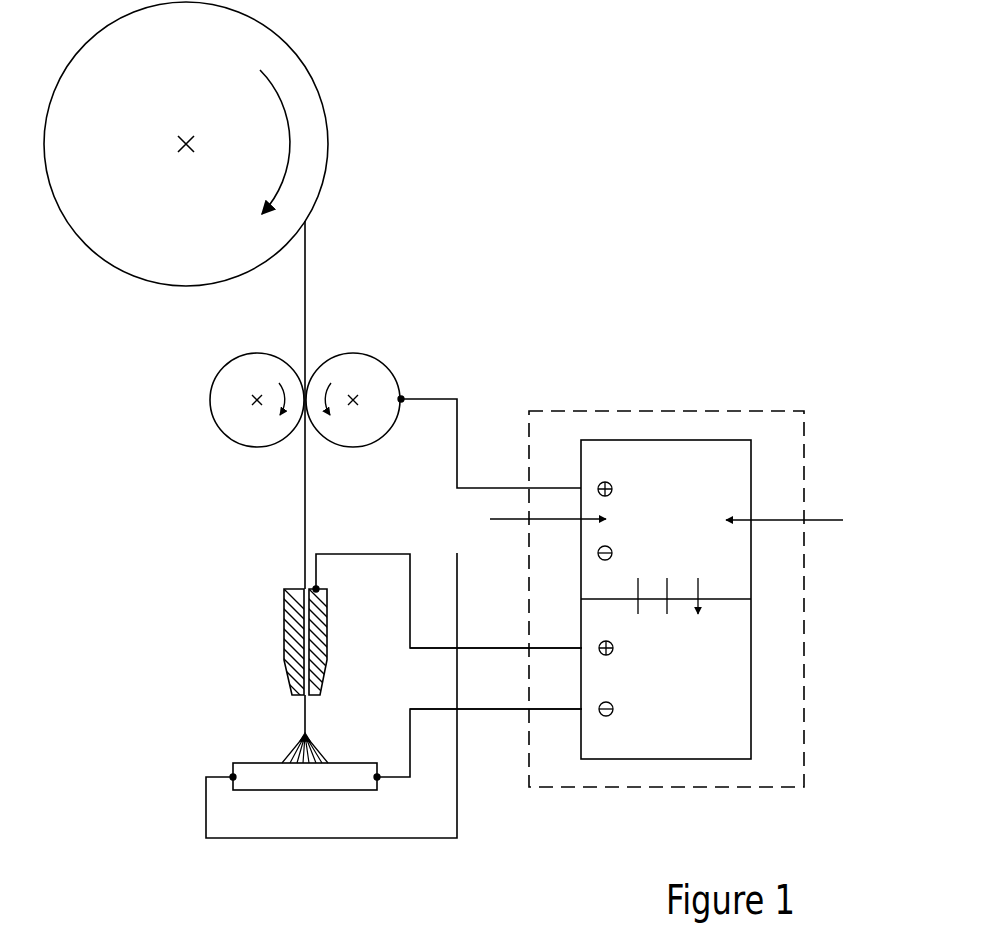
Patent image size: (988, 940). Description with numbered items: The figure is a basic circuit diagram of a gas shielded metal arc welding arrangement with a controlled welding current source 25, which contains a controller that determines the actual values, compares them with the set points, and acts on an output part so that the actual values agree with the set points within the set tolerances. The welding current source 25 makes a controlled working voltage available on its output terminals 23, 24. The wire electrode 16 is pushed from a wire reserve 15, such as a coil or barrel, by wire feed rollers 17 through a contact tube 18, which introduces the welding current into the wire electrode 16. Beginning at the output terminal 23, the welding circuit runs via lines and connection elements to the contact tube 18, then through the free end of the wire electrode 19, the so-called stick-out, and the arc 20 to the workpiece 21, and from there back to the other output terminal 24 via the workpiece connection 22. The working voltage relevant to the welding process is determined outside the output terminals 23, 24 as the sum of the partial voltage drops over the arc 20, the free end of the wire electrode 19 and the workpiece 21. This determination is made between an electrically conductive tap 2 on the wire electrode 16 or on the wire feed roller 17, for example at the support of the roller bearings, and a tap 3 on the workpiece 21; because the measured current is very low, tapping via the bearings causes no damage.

The wire reserve 15 is at (300, 94).
The wire electrode 16 is at (332, 298).
The wire feed rollers 17 is at (237, 373).
The electrically conductive tap 2 is at (403, 398).
The contact tube 18 is at (283, 603).
The free end of the wire electrode 19 is at (303, 712).
The arc 20 is at (290, 753).
The workpiece 21 is at (242, 770).
The workpiece connection 22 is at (377, 777).
The tap on the workpiece 3 is at (233, 778).
The output terminal 23 is at (526, 647).
The output terminal 24 is at (526, 708).
The controlled welding current source 25 is at (807, 460).